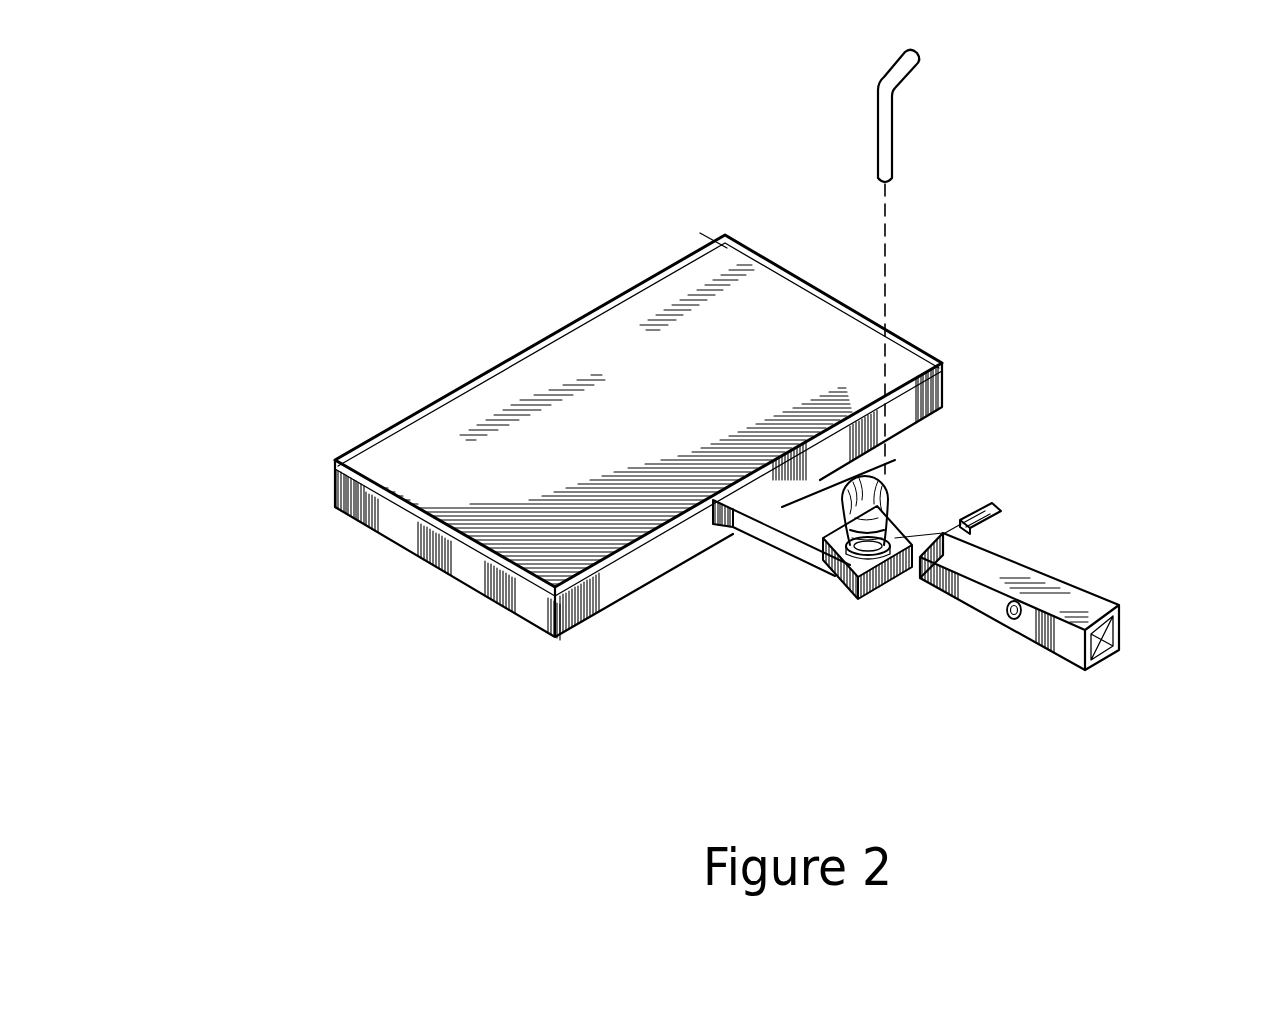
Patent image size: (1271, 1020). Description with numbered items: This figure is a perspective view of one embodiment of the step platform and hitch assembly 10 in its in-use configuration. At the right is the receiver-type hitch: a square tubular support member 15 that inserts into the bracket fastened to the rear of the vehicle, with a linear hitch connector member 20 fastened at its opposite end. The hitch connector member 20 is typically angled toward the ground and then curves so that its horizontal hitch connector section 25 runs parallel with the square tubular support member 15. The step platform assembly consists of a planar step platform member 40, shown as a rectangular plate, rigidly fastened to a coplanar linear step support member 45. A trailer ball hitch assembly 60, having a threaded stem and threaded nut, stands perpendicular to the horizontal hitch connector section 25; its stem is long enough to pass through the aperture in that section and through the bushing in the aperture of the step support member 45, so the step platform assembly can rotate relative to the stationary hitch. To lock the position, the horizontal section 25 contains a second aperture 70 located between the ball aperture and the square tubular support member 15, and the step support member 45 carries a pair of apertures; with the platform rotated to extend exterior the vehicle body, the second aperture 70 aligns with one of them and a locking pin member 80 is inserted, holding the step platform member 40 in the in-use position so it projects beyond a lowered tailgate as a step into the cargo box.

The hitch mounted step assembly 10 is at (408, 720).
The square tubular support member 15 is at (1073, 593).
The hitch connector member 20 is at (963, 513).
The horizontal hitch connector section 25 is at (835, 588).
The step platform member 40 is at (508, 413).
The step support member 45 is at (780, 508).
The ball hitch assembly 60 is at (888, 480).
The second aperture 70 is at (897, 535).
The locking pin member 80 is at (883, 105).